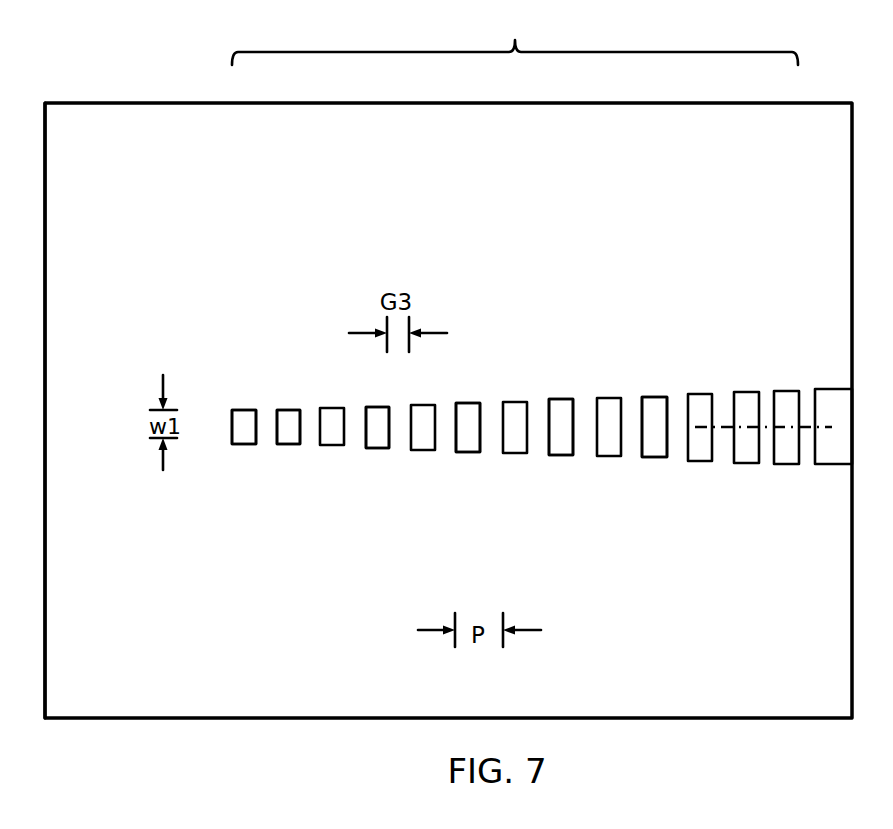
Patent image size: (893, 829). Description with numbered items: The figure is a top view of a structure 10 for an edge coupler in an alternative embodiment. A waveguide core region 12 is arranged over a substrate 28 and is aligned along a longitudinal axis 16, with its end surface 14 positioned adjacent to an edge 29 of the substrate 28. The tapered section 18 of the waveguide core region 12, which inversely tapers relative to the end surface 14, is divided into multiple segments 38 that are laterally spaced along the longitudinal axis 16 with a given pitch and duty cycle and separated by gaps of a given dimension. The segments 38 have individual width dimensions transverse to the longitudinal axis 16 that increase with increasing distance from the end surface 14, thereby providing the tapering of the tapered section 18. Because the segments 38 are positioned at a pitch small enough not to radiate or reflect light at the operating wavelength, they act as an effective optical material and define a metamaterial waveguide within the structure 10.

The structure 10 is at (708, 208).
The waveguide core region 12 is at (470, 378).
The end surface 14 is at (232, 430).
The longitudinal axis 16 is at (728, 427).
The tapered section 18 is at (515, 38).
The substrate 28 is at (103, 638).
The edge 29 is at (45, 307).
The segments 38 is at (285, 431).